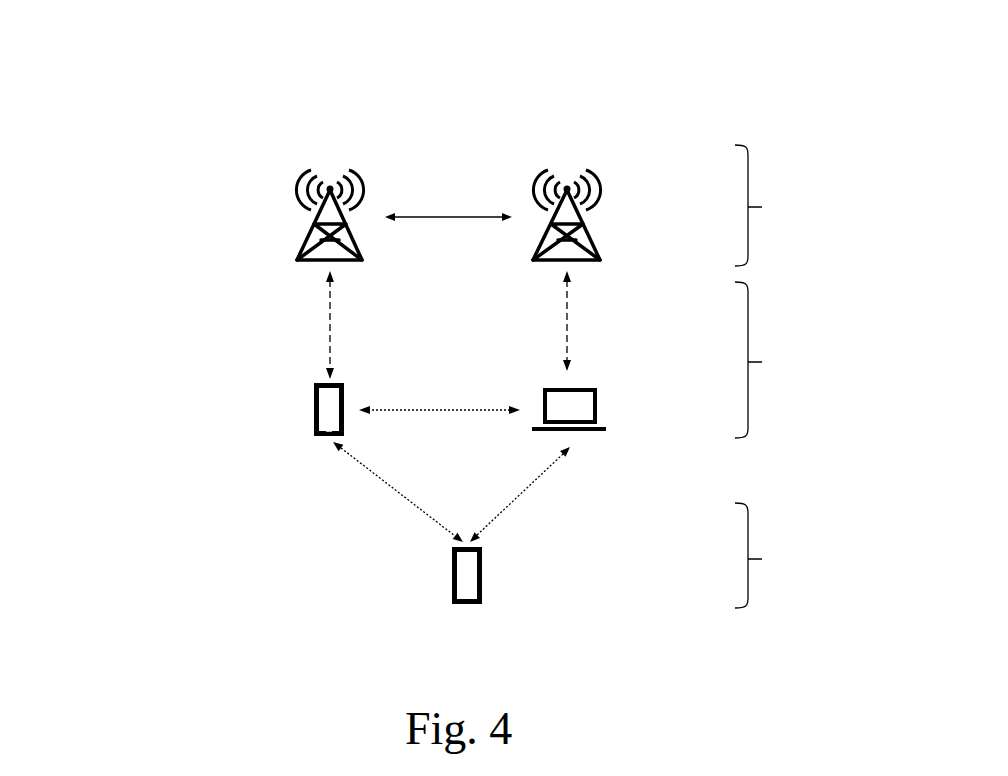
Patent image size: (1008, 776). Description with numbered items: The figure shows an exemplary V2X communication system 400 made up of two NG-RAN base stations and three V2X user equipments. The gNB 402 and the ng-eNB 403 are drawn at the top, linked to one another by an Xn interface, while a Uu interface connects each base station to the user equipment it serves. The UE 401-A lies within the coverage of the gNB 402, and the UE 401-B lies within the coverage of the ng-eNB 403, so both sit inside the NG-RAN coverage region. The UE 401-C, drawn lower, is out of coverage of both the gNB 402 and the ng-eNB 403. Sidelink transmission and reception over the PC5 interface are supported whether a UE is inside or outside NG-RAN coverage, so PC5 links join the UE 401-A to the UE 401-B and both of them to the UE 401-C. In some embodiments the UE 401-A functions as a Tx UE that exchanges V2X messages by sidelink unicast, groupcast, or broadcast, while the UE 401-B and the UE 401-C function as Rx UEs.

The V2X communication system 400 is at (140, 70).
The gNB 402 is at (330, 157).
The ng-eNB 403 is at (568, 163).
The UE 401-A is at (328, 443).
The UE 401-B is at (570, 452).
The UE 401-C is at (472, 607).